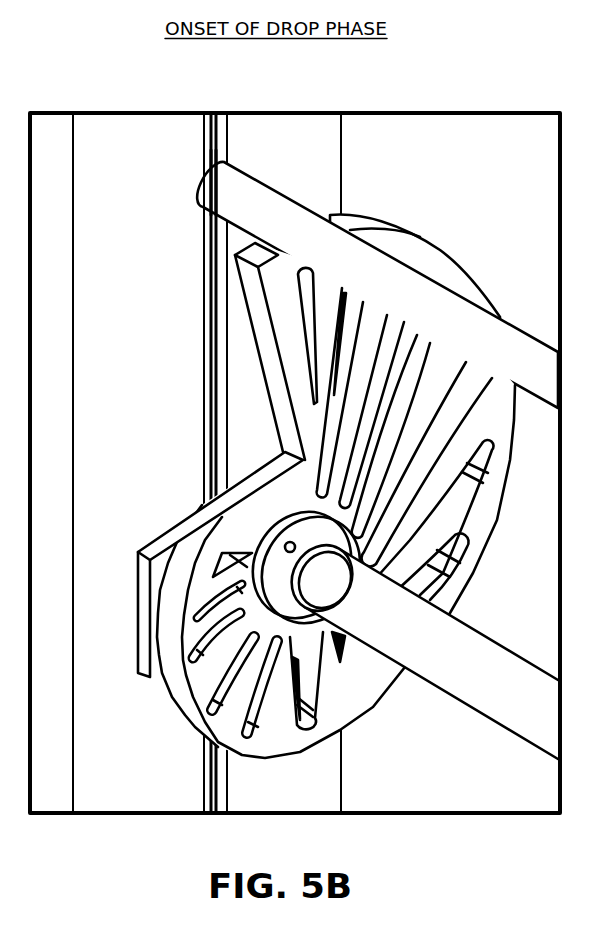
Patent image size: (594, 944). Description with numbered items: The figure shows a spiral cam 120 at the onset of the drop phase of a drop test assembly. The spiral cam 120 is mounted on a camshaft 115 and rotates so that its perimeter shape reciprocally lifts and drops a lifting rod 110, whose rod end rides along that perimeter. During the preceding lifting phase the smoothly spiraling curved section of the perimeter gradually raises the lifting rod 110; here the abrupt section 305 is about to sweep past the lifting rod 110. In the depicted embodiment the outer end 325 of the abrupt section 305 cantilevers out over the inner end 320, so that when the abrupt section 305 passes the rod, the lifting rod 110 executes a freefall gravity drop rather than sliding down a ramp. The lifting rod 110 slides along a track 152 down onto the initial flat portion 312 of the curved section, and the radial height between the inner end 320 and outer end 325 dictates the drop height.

The lifting rod 110 is at (358, 262).
The camshaft 115 is at (413, 625).
The spiral cam 120 is at (368, 695).
The track 152 is at (206, 287).
The abrupt section 305 is at (265, 341).
The flat portion 312 is at (256, 489).
The inner end 320 is at (289, 462).
The outer end 325 is at (219, 258).